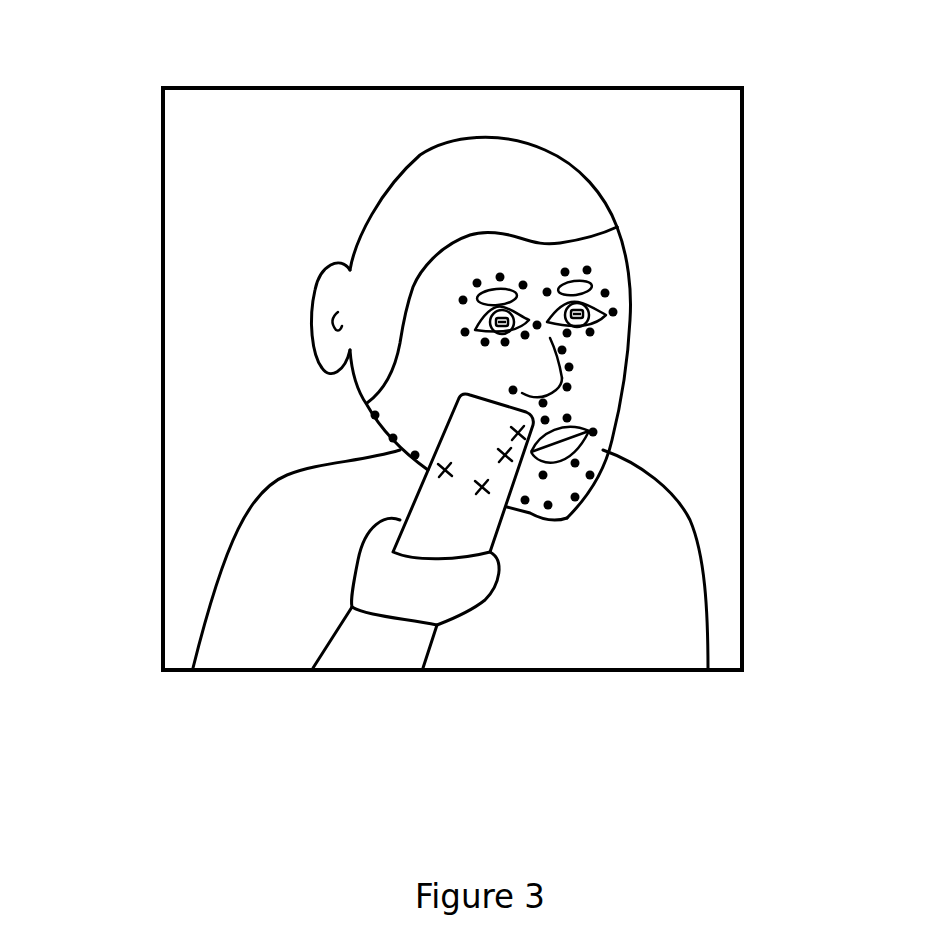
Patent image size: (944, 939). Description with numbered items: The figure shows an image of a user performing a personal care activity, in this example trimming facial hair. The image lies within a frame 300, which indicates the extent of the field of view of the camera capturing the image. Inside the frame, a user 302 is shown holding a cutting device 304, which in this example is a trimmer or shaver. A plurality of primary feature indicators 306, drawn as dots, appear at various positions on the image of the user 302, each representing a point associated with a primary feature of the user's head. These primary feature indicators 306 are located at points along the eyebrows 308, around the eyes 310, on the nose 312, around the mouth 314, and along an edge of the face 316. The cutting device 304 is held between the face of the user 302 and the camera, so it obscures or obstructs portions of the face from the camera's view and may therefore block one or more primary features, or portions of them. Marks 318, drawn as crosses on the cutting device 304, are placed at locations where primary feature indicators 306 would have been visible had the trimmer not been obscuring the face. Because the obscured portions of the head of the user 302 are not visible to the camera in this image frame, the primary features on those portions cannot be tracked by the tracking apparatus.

The frame 300 is at (163, 182).
The user 302 is at (376, 162).
The cutting device 304 is at (413, 497).
The primary feature indicators 306 is at (565, 270).
The eyebrows 308 is at (595, 283).
The eyes 310 is at (603, 318).
The nose 312 is at (583, 378).
The mouth 314 is at (587, 448).
The edge of the face 316 is at (597, 492).
The marks 318 is at (450, 478).